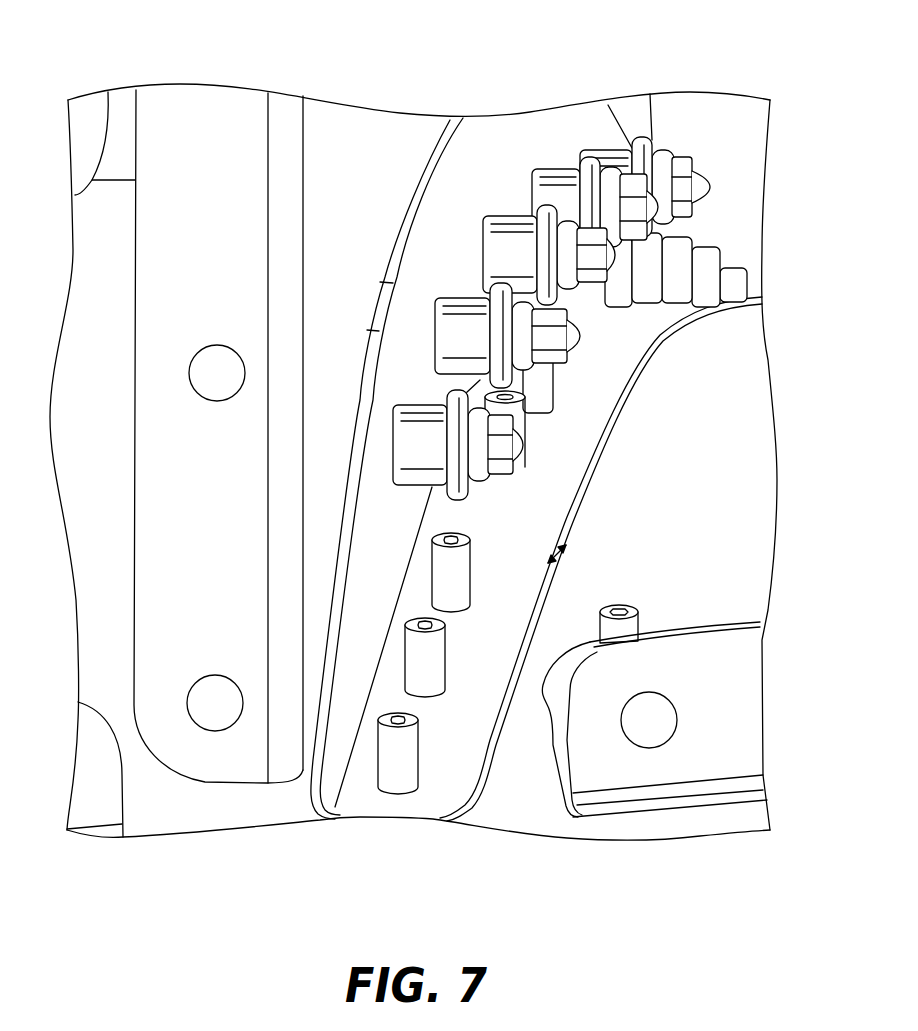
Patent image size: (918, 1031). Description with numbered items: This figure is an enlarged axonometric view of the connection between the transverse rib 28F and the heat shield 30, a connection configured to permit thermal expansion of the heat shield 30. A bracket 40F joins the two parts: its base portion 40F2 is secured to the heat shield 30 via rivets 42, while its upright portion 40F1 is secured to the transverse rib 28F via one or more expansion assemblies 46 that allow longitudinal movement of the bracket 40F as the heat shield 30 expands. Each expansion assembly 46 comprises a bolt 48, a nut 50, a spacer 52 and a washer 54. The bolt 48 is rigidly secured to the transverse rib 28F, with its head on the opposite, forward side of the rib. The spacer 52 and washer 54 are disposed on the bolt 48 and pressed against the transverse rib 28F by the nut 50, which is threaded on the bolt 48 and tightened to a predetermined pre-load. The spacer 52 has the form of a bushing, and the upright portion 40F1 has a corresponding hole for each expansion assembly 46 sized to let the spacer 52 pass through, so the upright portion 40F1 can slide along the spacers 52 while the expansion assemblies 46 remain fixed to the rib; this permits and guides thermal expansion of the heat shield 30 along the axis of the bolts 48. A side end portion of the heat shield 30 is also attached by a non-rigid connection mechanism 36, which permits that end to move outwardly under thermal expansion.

The transverse rib 28F is at (341, 169).
The heat shield 30 is at (730, 408).
The connection mechanism 36 is at (775, 648).
The bracket 40F is at (353, 793).
The upright portion 40F1 is at (515, 145).
The base portion 40F2 is at (567, 443).
The rivets 42 is at (447, 663).
The expansion assembly 46 is at (398, 345).
The bolt 48 is at (557, 322).
The nut 50 is at (553, 370).
The spacer 52 is at (438, 320).
The washer 54 is at (497, 287).